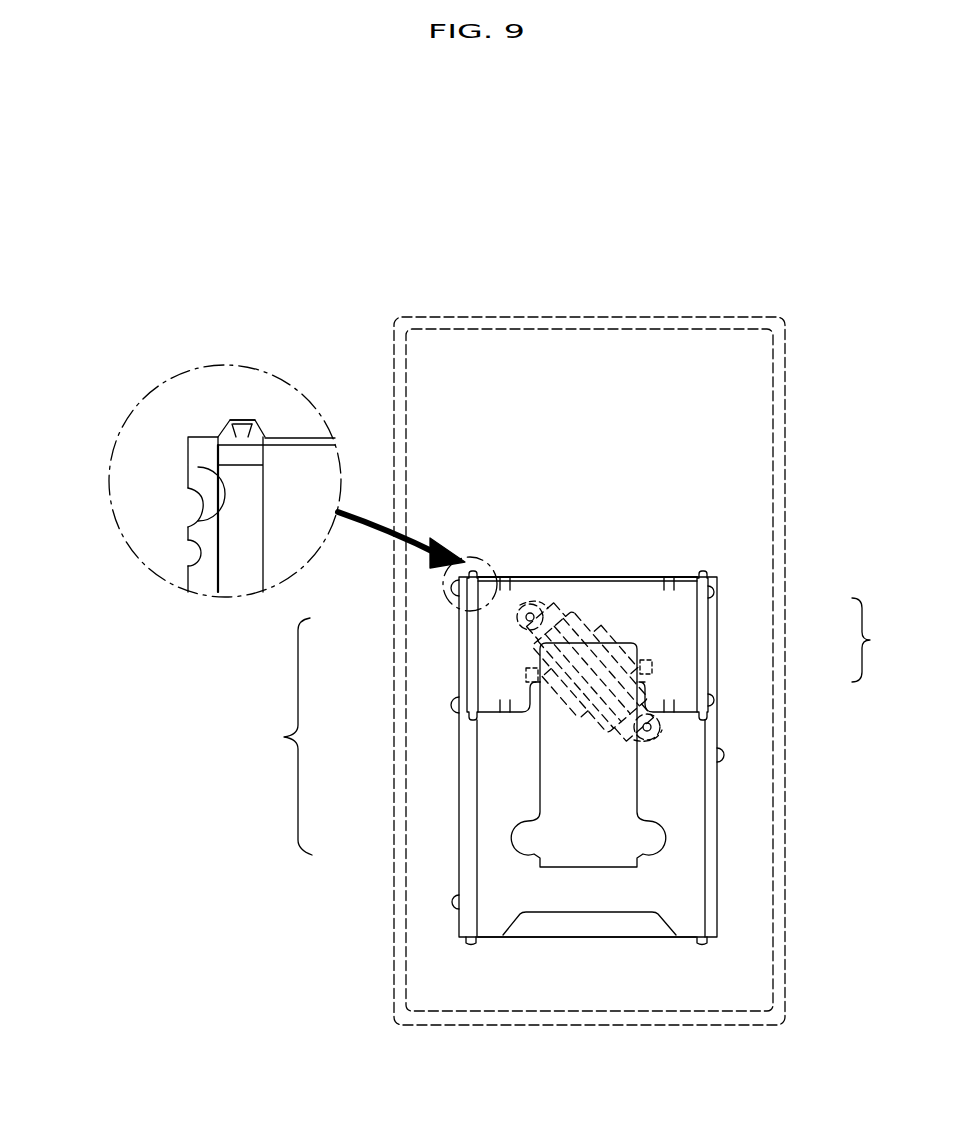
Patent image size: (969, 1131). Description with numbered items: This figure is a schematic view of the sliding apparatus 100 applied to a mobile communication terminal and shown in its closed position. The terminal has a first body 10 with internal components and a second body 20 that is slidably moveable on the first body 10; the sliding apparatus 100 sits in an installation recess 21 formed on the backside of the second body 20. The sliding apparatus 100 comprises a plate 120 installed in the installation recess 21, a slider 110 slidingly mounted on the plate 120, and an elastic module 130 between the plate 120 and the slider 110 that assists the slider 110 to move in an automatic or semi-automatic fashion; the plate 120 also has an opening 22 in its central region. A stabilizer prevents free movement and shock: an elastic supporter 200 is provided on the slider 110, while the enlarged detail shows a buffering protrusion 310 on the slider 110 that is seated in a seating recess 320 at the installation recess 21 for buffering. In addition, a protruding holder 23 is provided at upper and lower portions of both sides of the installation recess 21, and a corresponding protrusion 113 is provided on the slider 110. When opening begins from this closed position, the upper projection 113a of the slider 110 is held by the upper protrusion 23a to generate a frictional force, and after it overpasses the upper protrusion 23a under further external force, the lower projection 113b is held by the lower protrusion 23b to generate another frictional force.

The first body 10 is at (776, 375).
The second body 20 is at (752, 481).
The installation recess 21 is at (710, 753).
The slot 22 is at (608, 838).
The protruding holder 23 is at (281, 736).
The upper protrusion 23a is at (461, 613).
The lower protrusion 23b is at (461, 900).
The sliding apparatus 100 is at (598, 947).
The slider 110 is at (640, 592).
The protrusion 113 is at (882, 640).
The upper projection 113a is at (714, 592).
The lower projection 113b is at (714, 698).
The plate 120 is at (685, 800).
The elastic module 130 is at (580, 596).
The elastic supporter 200 is at (503, 582).
The buffering protrusion 310 is at (245, 432).
The seating recess 320 is at (260, 425).